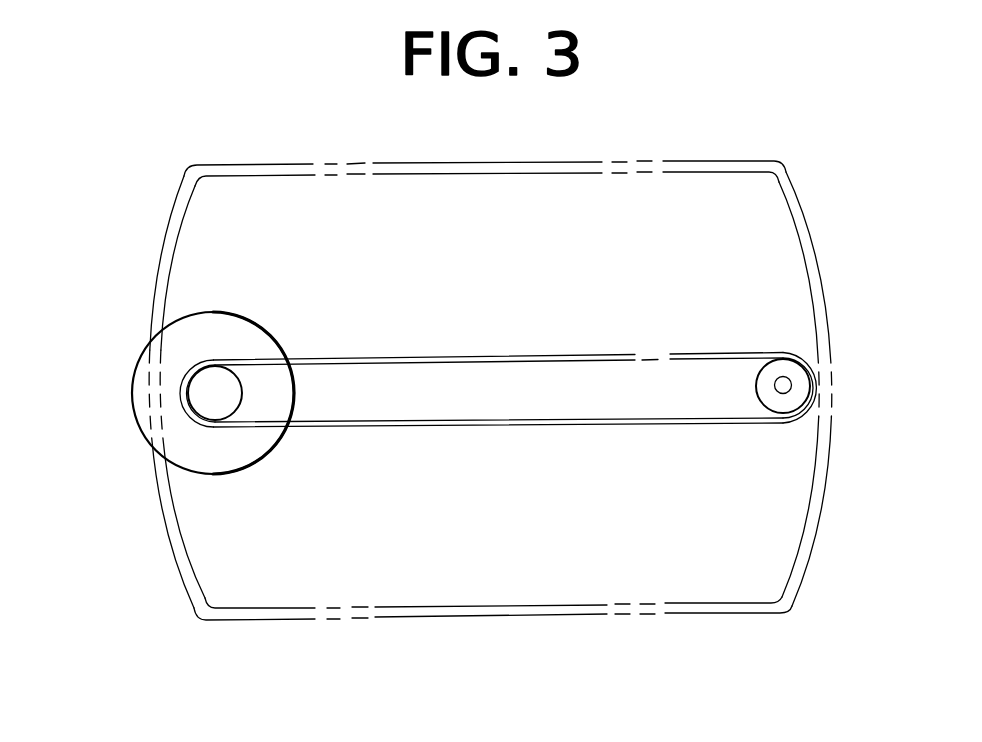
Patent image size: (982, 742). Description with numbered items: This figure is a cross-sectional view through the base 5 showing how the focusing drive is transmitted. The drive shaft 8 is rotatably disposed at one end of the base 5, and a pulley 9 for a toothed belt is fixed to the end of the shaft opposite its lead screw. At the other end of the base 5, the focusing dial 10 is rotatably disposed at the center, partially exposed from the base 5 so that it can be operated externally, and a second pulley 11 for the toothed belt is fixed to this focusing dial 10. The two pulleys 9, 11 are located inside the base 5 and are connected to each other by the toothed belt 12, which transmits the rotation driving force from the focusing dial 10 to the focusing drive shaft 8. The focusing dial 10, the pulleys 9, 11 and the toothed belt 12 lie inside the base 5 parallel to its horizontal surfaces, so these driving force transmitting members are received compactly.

The base 5 is at (420, 615).
The drive shaft 8 is at (789, 378).
The pulley 9 is at (797, 401).
The focusing dial 10 is at (183, 348).
The pulley 11 is at (213, 407).
The toothed belt 12 is at (610, 421).